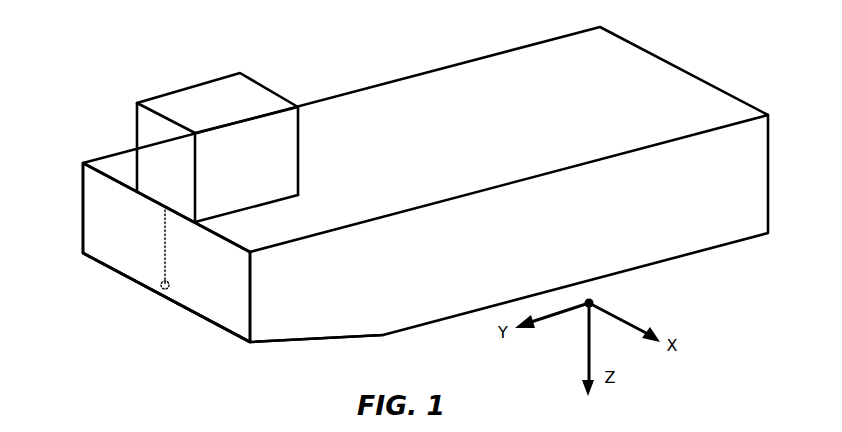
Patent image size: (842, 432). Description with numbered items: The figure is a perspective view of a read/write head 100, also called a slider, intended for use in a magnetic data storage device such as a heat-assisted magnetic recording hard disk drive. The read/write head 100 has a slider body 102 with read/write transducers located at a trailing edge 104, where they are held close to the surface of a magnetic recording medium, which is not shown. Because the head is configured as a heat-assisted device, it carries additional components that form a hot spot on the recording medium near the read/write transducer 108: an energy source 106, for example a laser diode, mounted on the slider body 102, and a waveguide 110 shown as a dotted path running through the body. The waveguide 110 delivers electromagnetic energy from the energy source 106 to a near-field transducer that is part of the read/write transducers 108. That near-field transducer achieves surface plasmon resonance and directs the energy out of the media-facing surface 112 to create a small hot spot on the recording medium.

The read/write head 100 is at (247, 56).
The slider body 102 is at (372, 96).
The trailing edge 104 is at (87, 232).
The energy source 106 is at (221, 92).
The read/write transducer 108 is at (162, 315).
The waveguide 110 is at (163, 244).
The media-facing surface 112 is at (250, 344).